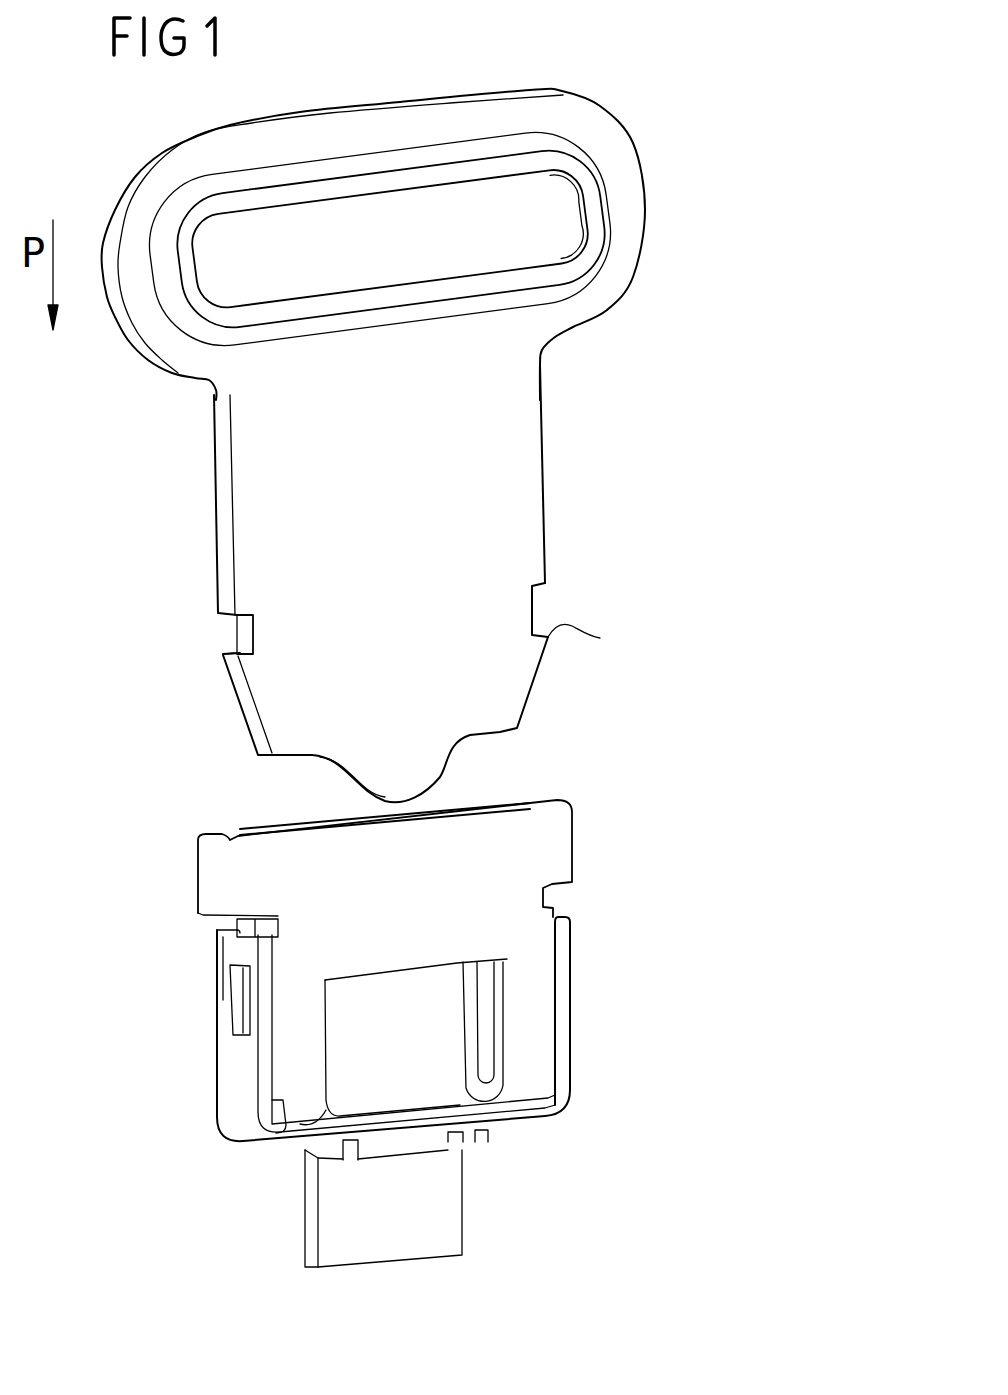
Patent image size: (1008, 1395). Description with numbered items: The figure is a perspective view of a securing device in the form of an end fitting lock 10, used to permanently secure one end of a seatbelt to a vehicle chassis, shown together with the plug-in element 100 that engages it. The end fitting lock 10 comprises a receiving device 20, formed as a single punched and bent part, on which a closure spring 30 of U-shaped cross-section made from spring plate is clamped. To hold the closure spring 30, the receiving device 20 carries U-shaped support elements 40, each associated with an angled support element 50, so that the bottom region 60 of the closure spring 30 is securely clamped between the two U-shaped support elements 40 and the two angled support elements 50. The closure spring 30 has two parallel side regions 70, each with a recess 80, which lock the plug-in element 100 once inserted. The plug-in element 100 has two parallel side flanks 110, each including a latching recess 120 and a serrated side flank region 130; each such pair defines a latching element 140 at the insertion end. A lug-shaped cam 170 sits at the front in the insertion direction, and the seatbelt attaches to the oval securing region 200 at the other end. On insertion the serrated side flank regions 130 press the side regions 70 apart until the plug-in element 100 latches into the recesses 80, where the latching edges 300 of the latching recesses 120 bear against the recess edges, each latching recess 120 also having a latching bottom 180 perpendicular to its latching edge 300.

The end fitting lock 10 is at (158, 910).
The receiving device 20 is at (562, 842).
The closure spring 30 is at (573, 1082).
The support elements 40 is at (520, 1073).
The angled support elements 50 is at (350, 1160).
The bottom region 60 is at (393, 1140).
The side regions 70 is at (572, 985).
The recess 80 is at (237, 1010).
The plug-in element 100 is at (508, 494).
The side flanks 110 is at (548, 425).
The latching recess 120 is at (563, 598).
The serrated side flank region 130 is at (530, 700).
The latching element 140 is at (127, 615).
The lug-shaped cam 170 is at (443, 778).
The latching bottom 180 is at (246, 640).
The securing region 200 is at (508, 197).
The latching edge 300 is at (605, 635).